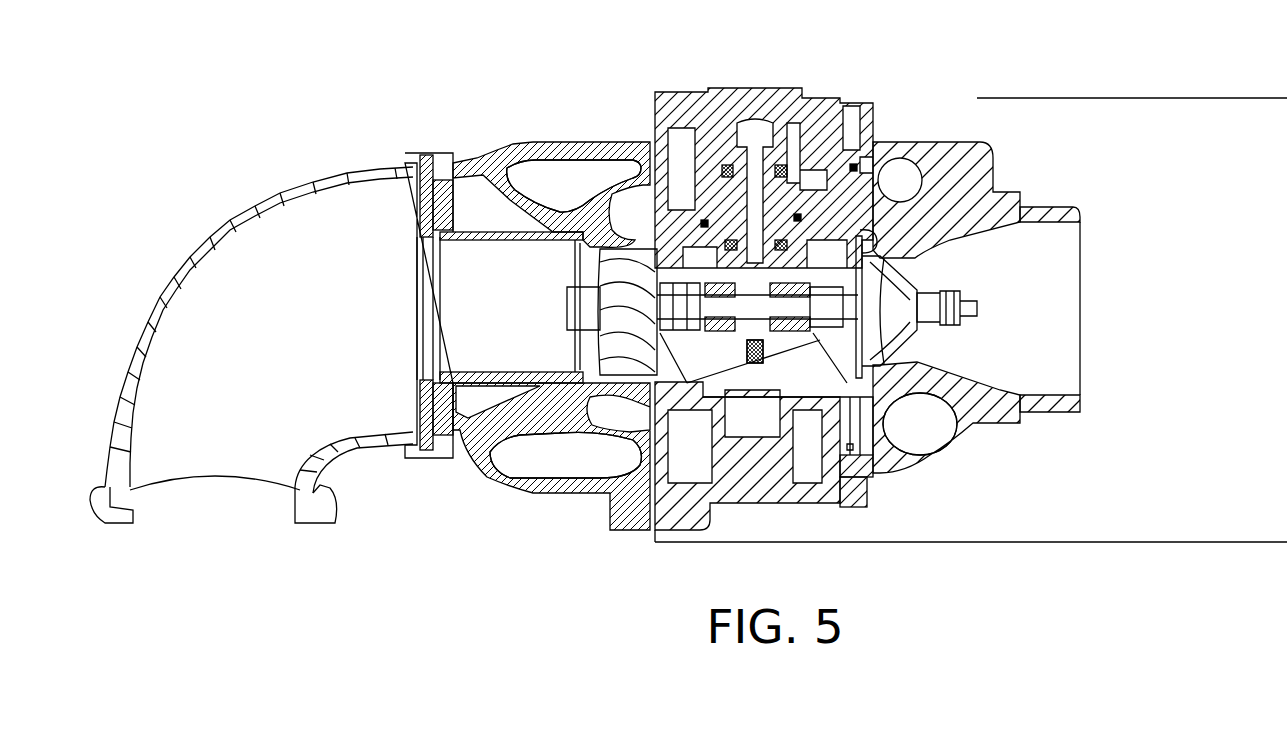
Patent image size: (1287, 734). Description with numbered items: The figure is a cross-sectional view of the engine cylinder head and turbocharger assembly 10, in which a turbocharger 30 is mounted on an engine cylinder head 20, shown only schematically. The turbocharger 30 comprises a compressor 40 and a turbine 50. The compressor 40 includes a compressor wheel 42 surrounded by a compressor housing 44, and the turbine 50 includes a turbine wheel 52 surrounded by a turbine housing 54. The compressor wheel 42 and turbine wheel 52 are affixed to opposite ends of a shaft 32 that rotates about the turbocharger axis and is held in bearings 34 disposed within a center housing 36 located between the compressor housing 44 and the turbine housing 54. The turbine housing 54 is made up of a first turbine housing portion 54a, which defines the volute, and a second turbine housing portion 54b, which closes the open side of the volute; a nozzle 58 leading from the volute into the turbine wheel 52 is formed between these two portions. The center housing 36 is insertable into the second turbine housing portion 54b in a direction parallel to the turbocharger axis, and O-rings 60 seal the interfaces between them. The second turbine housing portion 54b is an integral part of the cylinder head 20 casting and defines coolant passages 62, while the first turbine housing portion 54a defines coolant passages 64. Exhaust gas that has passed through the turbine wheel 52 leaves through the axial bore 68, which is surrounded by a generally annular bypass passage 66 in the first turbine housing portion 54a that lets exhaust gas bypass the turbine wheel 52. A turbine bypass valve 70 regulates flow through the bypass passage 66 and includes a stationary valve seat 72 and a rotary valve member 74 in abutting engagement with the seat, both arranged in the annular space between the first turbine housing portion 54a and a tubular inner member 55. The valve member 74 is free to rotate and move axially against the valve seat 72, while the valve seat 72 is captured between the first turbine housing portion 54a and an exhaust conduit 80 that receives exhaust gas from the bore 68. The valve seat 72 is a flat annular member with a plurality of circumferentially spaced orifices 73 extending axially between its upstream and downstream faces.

The engine cylinder head and turbocharger assembly 10 is at (410, 530).
The engine cylinder head 20 is at (1125, 98).
The turbocharger 30 is at (528, 308).
The shaft 32 is at (780, 303).
The bearings 34 is at (913, 264).
The center housing 36 is at (853, 430).
The compressor 40 is at (966, 291).
The compressor wheel 42 is at (903, 333).
The compressor housing 44 is at (937, 463).
The turbine 50 is at (558, 492).
The turbine wheel 52 is at (520, 307).
The turbine housing 54 is at (592, 128).
The first turbine housing portion 54a is at (492, 467).
The second turbine housing portion 54b is at (668, 522).
The tubular inner member 55 is at (497, 370).
The nozzle 58 is at (644, 237).
The O-rings 60 is at (797, 217).
The coolant passages 62 is at (853, 167).
The coolant passages 64 is at (545, 180).
The bypass passage 66 is at (474, 200).
The axial bore 68 is at (453, 343).
The turbine bypass valve 70 is at (413, 287).
The valve seat 72 is at (417, 207).
The orifices 73 is at (413, 407).
The rotary valve member 74 is at (452, 212).
The exhaust conduit 80 is at (248, 213).